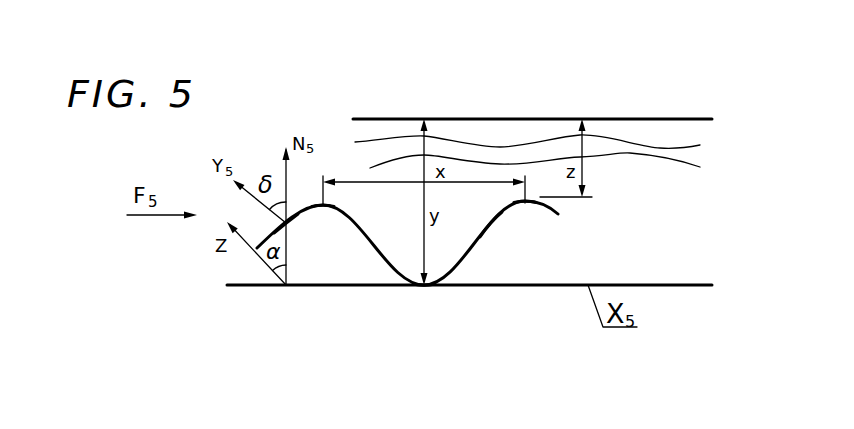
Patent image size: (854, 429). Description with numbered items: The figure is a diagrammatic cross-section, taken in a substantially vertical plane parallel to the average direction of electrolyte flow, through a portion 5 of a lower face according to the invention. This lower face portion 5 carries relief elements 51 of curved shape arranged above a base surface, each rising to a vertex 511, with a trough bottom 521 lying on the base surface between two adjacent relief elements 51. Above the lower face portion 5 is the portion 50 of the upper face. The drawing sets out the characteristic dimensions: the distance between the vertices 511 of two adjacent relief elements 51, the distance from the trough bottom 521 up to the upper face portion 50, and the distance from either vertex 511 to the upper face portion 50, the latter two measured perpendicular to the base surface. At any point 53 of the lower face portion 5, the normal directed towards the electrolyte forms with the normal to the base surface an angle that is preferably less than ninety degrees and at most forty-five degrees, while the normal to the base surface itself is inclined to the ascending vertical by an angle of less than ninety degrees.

The lower face portion 5 is at (475, 253).
The upper face portion 50 is at (573, 97).
The relief element 51 is at (492, 222).
The vertex 511 is at (324, 207).
The trough bottom 521 is at (424, 282).
The point of lower face portion 53 is at (294, 228).